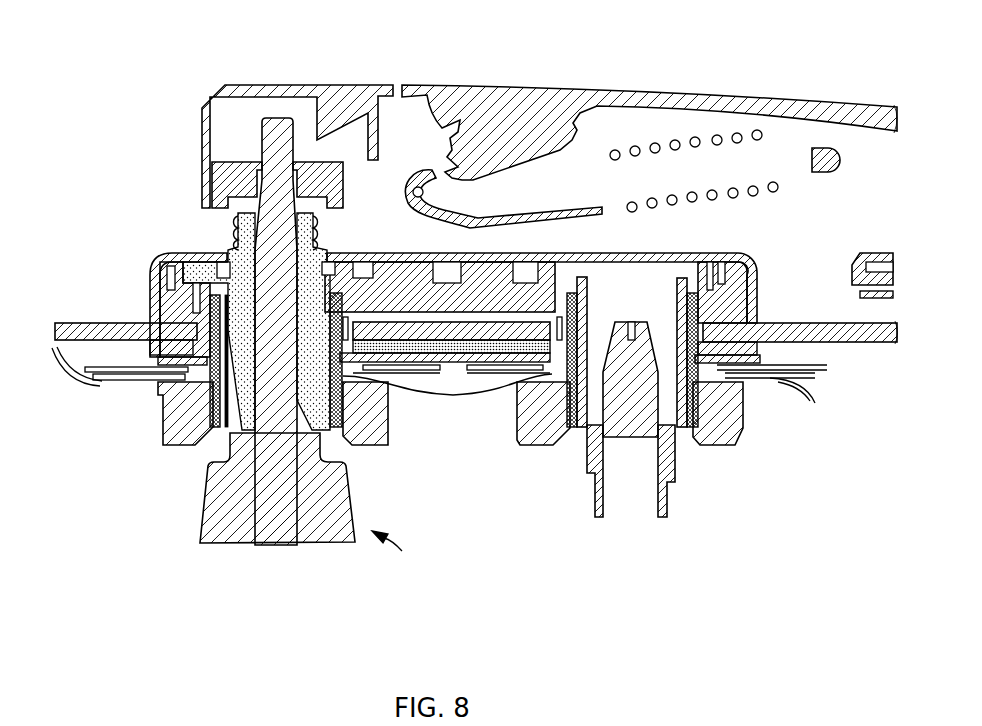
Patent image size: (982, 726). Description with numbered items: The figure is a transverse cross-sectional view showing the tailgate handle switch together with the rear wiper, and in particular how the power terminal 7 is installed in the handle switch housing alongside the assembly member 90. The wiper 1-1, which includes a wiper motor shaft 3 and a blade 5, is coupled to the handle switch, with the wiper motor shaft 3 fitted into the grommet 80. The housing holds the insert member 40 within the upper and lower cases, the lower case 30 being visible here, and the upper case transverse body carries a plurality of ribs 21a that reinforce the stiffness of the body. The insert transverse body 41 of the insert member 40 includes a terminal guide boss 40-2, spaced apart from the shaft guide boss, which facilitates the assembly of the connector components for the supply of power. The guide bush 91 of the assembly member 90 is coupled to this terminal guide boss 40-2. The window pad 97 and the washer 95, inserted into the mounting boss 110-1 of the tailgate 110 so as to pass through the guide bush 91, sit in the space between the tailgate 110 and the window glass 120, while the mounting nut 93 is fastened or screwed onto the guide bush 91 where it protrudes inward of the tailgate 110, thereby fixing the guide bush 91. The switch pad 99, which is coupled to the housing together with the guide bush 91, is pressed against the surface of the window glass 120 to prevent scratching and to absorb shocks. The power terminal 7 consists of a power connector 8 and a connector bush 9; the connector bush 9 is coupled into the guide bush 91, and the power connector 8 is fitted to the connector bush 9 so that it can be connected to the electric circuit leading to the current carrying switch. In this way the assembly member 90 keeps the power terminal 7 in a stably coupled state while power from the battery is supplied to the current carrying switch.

The wiper 1-1 is at (408, 549).
The wiper motor shaft 3 is at (280, 415).
The blade 5 is at (514, 113).
The power terminal 7 is at (606, 471).
The power connector 8 is at (630, 445).
The connector bush 9 is at (590, 410).
The ribs 21a is at (570, 253).
The lower case 30 is at (757, 302).
The insert member 40 is at (157, 263).
The terminal guide boss 40-2 is at (757, 282).
The insert transverse body 41 is at (148, 292).
The grommet 80 is at (235, 245).
The assembly member 90 is at (770, 440).
The guide bush 91 is at (690, 402).
The mounting nut 93 is at (735, 420).
The washer 95 is at (766, 357).
The window pad 97 is at (790, 367).
The switch pad 99 is at (458, 322).
The tailgate 110 is at (94, 393).
The mounting boss 110-1 is at (197, 377).
The window glass 120 is at (81, 323).